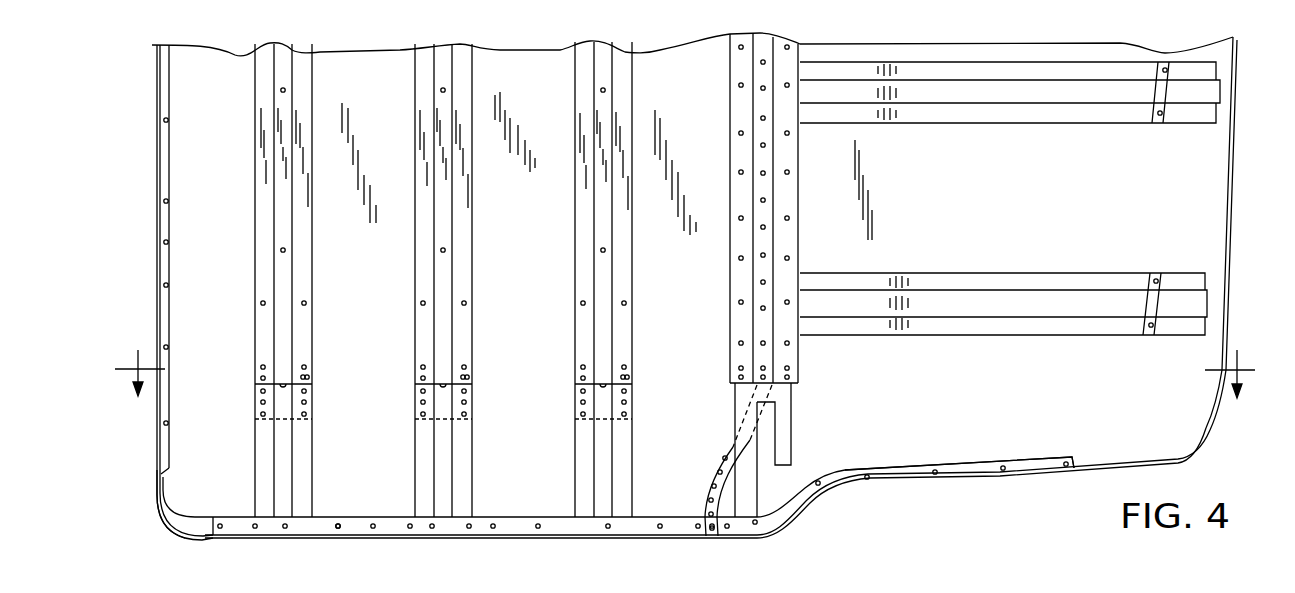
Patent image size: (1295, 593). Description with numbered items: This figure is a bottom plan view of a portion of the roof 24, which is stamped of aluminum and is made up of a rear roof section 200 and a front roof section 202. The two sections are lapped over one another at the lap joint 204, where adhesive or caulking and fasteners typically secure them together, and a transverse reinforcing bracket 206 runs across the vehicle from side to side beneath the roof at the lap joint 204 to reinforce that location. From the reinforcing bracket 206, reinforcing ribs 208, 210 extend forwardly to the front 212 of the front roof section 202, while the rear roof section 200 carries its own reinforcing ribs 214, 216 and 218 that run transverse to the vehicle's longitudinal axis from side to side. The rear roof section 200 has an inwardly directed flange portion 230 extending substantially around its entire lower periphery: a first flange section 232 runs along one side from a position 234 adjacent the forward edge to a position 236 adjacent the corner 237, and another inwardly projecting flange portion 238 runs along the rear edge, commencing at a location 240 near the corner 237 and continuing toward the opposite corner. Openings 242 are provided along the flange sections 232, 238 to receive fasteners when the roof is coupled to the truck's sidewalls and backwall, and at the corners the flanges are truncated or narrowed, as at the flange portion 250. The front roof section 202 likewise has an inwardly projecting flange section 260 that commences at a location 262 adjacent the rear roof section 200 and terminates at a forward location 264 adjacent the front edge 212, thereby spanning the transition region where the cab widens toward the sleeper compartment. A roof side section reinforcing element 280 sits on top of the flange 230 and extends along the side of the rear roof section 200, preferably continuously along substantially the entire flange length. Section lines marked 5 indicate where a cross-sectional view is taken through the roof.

The roof 24 is at (1186, 412).
The rear roof section 200 is at (552, 237).
The front roof section 202 is at (1092, 200).
The lap joint 204 is at (717, 457).
The transverse reinforcing bracket 206 is at (785, 353).
The reinforcing rib 208 is at (1007, 122).
The reinforcing rib 210 is at (1037, 282).
The front 212 is at (1234, 250).
The reinforcing rib 214 is at (580, 268).
The reinforcing rib 216 is at (422, 228).
The reinforcing rib 218 is at (305, 347).
The inwardly directed flange portion 230 is at (493, 525).
The first flange section 232 is at (410, 527).
The position adjacent the forward edge 234 is at (714, 531).
The position adjacent the corner 236 is at (198, 536).
The corner 237 is at (157, 521).
The inwardly projecting flange portion 238 is at (168, 230).
The location near the corner 240 is at (166, 473).
The openings 242 is at (170, 346).
The flange portion 250 is at (172, 524).
The inwardly projecting flange section 260 is at (925, 475).
The location adjacent to the roof section 262 is at (710, 524).
The forward location 264 is at (1077, 463).
The roof side section reinforcing element 280 is at (537, 522).
The section line 5- 5 is at (688, 369).